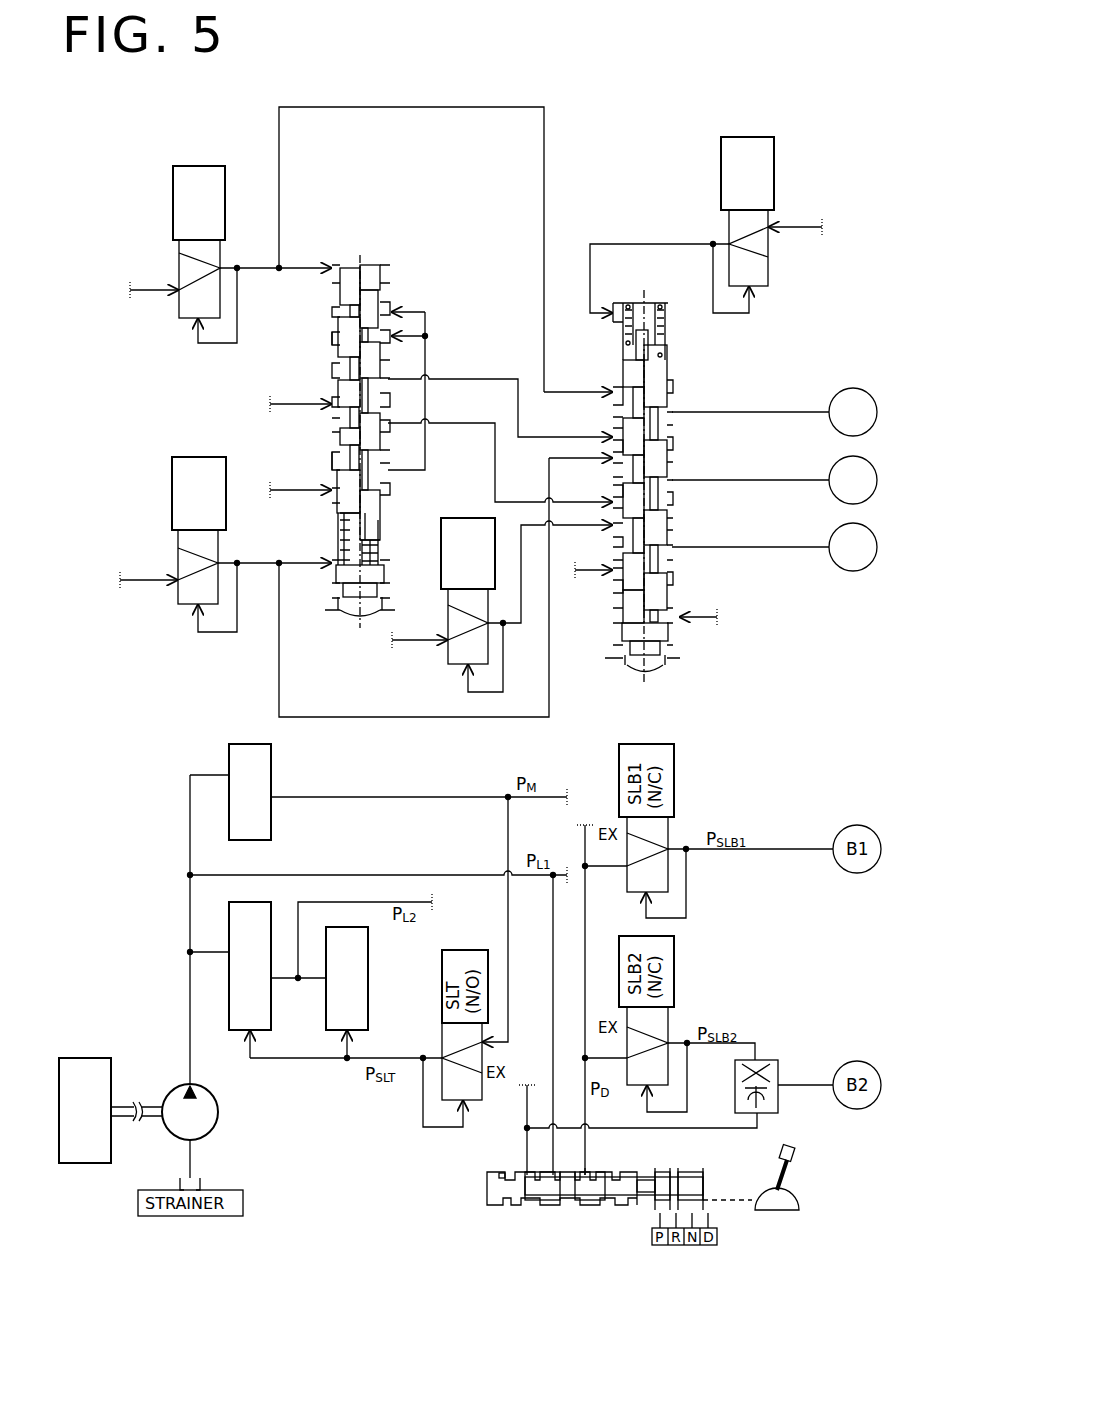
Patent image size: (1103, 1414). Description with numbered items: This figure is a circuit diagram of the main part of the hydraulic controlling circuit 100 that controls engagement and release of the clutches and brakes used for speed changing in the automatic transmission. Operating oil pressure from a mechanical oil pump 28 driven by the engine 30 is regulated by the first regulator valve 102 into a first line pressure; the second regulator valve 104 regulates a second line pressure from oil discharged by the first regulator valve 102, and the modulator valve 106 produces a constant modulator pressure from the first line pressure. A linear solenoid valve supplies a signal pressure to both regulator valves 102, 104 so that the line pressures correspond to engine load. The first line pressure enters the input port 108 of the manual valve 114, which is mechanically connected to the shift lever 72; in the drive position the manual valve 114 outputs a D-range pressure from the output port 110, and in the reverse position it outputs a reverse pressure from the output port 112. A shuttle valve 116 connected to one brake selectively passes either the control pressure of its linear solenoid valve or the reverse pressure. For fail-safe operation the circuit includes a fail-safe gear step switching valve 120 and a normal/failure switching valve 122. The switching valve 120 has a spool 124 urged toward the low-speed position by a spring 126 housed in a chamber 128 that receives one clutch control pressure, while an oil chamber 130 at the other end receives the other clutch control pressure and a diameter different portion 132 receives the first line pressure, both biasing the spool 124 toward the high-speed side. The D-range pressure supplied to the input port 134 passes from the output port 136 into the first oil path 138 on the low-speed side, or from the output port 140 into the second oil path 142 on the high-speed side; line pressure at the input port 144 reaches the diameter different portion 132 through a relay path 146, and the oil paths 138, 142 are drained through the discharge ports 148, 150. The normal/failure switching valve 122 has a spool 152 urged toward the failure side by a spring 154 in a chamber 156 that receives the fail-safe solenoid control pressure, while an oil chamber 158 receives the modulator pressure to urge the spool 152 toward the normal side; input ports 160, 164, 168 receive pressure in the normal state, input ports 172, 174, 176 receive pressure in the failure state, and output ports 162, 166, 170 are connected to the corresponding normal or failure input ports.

The hydraulic controlling circuit 100 is at (550, 57).
The fail-safe gear step switching valve 120 is at (361, 100).
The normal/failure switching valve 122 is at (641, 236).
The oil chamber 130 is at (378, 272).
The diameter different portion 132 is at (386, 342).
The input port 134 is at (330, 394).
The output port 136 is at (388, 430).
The first oil path 138 is at (440, 430).
The output port 140 is at (388, 383).
The second oil path 142 is at (443, 378).
The input port 144 is at (330, 500).
The relay path 146 is at (388, 470).
The discharge port 148 is at (330, 452).
The discharge port 150 is at (330, 352).
The spool 124 is at (388, 492).
The spring 126 is at (382, 566).
The chamber 128 is at (348, 582).
The spool 152 is at (676, 504).
The spring 154 is at (668, 362).
The chamber 156 is at (668, 312).
The oil chamber 158 is at (619, 617).
The input port 160 is at (612, 456).
The output port 162 is at (676, 478).
The input port 164 is at (612, 388).
The output port 166 is at (676, 414).
The input port 168 is at (612, 526).
The output port 170 is at (676, 549).
The input port 172 is at (612, 502).
The input port 174 is at (612, 433).
The input port 176 is at (612, 569).
The first regulator valve 102 is at (233, 1030).
The second regulator valve 104 is at (370, 1020).
The modulator valve 106 is at (272, 822).
The input port 108 is at (558, 1172).
The output port 110 is at (588, 1170).
The output port 112 is at (515, 1171).
The manual valve 114 is at (562, 1214).
The shuttle valve 116 is at (772, 1060).
The mechanical oil pump 28 is at (205, 1125).
The engine 30 is at (82, 1068).
The shift lever 72 is at (795, 1174).